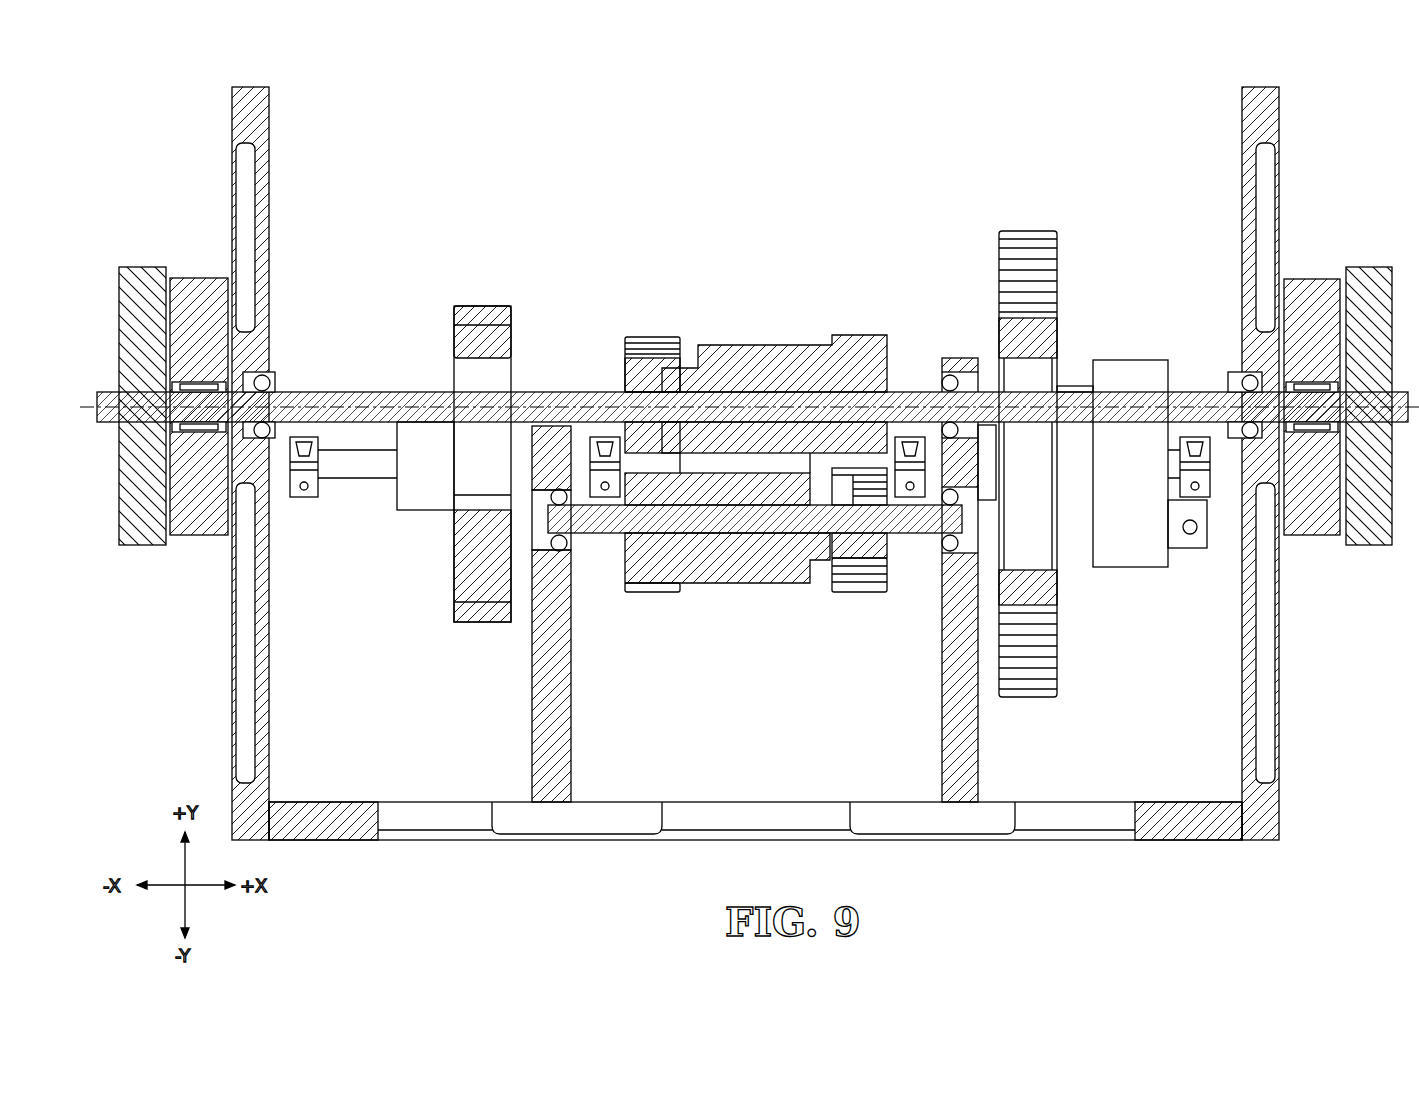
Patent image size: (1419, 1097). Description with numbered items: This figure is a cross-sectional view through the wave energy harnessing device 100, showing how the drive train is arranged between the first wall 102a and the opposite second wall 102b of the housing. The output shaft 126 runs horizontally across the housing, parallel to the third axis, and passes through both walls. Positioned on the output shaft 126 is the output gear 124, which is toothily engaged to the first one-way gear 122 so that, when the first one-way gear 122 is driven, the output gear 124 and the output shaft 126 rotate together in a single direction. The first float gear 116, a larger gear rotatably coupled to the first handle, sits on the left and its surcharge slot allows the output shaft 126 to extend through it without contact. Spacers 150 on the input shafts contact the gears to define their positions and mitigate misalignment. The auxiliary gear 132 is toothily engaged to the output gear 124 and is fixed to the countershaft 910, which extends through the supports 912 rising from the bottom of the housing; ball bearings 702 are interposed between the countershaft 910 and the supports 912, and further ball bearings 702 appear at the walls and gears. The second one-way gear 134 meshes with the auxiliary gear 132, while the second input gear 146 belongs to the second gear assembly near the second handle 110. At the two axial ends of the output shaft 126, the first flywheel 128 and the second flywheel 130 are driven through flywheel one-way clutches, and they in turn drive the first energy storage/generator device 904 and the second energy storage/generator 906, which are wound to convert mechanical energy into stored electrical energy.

The wave energy harnessing device 100 is at (512, 137).
The first wall 102a is at (262, 87).
The second wall 102b is at (1262, 87).
The second handle 110 is at (1118, 360).
The first float gear 116 is at (492, 306).
The first one-way gear 122 is at (653, 337).
The output gear 124 is at (757, 345).
The output shaft 126 is at (598, 392).
The first flywheel 128 is at (1312, 279).
The second flywheel 130 is at (200, 278).
The auxiliary gear 132 is at (750, 585).
The second one-way gear 134 is at (855, 592).
The second input gear 146 is at (1025, 231).
The spacers 150 is at (415, 510).
The ball bearings 702 is at (948, 430).
The first energy storage/generator device 904 is at (143, 267).
The second energy storage/generator 906 is at (205, 425).
The countershaft 910 is at (768, 520).
The supports 912 is at (571, 750).